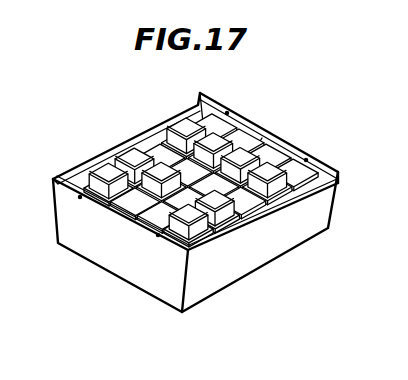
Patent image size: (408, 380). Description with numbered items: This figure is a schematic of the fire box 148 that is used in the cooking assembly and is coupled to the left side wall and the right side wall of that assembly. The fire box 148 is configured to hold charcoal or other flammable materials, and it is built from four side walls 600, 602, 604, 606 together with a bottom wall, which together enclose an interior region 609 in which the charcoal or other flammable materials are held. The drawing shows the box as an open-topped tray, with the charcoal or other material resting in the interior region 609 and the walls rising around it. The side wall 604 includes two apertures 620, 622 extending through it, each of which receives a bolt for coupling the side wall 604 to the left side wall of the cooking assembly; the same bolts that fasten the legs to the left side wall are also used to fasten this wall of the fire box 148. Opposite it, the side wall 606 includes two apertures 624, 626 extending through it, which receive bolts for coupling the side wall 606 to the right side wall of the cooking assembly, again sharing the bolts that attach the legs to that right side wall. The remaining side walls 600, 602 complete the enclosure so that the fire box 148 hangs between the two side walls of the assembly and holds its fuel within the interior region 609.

The fire box 148 is at (259, 143).
The side wall 600 is at (262, 250).
The side wall 602 is at (102, 173).
The side wall 604 is at (113, 258).
The side wall 606 is at (272, 150).
The interior region 609 is at (185, 160).
The aperture 620 is at (80, 200).
The aperture 622 is at (160, 238).
The aperture 624 is at (229, 111).
The aperture 626 is at (309, 160).